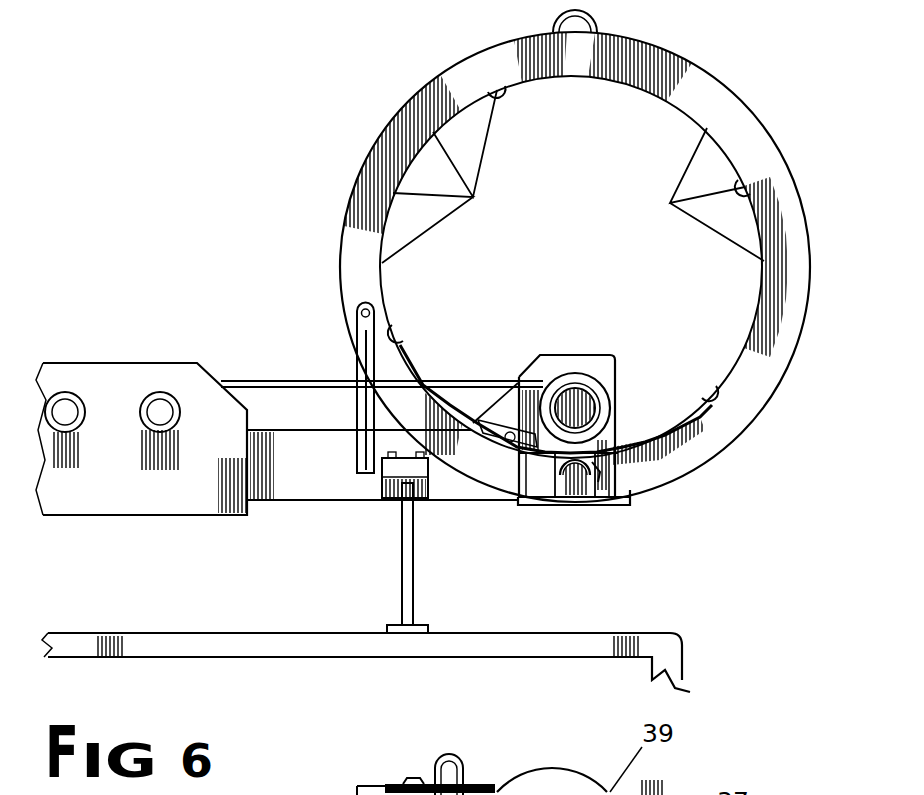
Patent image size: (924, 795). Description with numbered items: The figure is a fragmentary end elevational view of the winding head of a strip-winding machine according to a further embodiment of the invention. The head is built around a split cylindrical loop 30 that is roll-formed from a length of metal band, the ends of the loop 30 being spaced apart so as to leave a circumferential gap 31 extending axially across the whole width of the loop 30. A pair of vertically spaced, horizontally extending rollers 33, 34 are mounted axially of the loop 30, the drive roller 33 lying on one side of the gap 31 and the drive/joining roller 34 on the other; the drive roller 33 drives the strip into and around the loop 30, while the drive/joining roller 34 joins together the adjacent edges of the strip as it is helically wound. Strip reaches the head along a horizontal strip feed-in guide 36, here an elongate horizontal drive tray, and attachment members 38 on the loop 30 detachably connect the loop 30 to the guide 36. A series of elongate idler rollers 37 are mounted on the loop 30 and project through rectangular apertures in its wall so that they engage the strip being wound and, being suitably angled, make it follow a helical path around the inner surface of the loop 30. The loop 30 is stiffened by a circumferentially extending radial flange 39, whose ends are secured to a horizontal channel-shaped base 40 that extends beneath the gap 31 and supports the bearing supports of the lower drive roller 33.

The split cylindrical loop 30 is at (740, 360).
The circumferential gap 31 is at (597, 470).
The drive roller 33 is at (590, 477).
The drive/joining roller 34 is at (593, 390).
The strip feed-in guide 36 is at (283, 470).
The idler rollers 37 is at (573, 176).
The attachment members 38 is at (357, 370).
The radial flange 39 is at (705, 95).
The channel-shaped base 40 is at (542, 503).